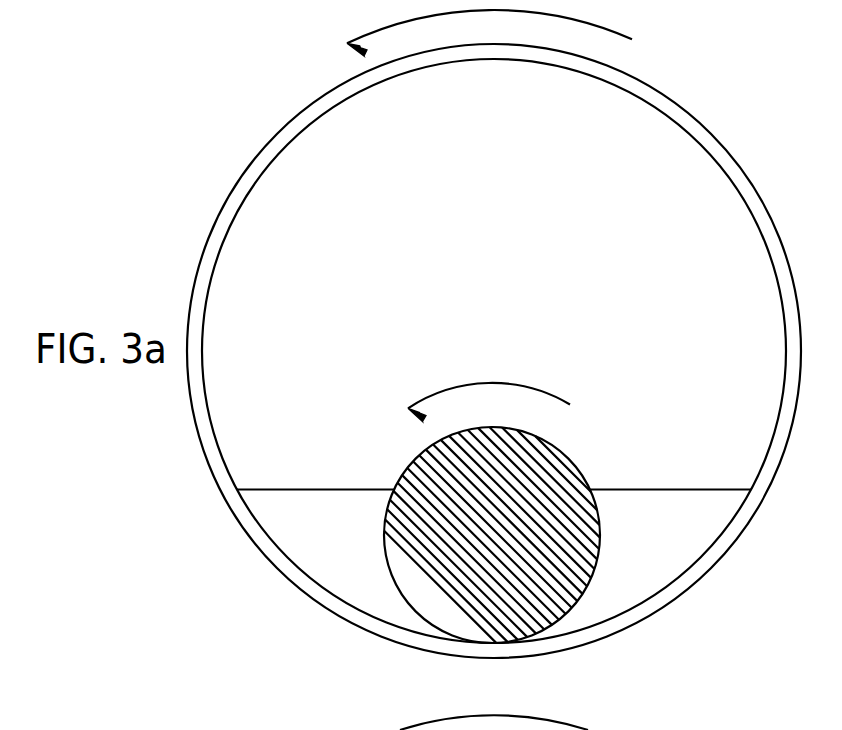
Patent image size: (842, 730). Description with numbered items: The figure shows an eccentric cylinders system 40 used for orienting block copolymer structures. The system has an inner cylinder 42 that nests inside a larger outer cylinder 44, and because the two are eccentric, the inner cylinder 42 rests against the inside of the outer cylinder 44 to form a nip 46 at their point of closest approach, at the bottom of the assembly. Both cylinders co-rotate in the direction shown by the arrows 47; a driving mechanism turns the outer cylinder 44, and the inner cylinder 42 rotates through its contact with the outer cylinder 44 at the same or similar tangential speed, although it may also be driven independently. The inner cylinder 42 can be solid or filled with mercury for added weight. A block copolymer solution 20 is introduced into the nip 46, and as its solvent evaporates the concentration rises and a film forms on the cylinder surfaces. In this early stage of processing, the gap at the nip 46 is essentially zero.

The eccentric cylinders system 40 is at (245, 50).
The outer cylinder 44 is at (662, 90).
The nip 46 is at (507, 660).
The block copolymer solution 20 is at (655, 489).
The inner cylinder 42 is at (562, 450).
The arrows 47 is at (632, 39).